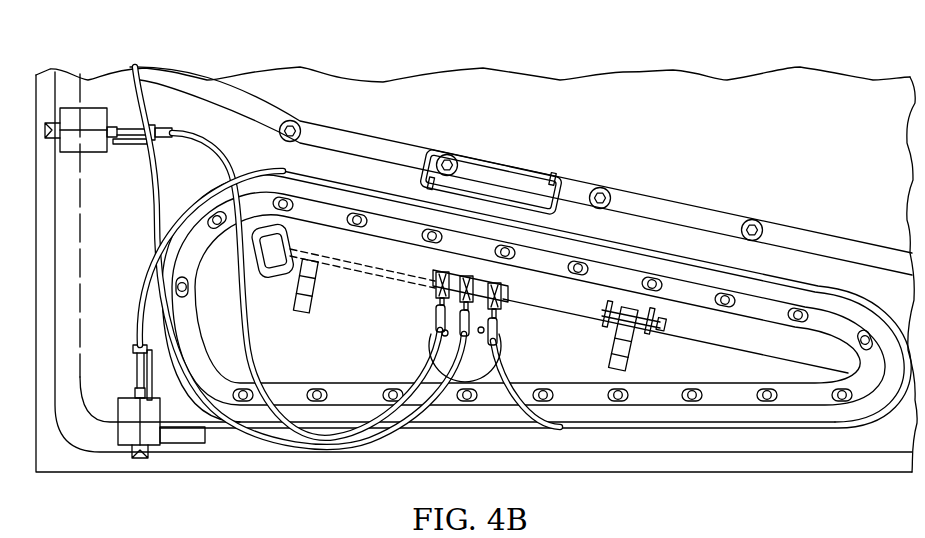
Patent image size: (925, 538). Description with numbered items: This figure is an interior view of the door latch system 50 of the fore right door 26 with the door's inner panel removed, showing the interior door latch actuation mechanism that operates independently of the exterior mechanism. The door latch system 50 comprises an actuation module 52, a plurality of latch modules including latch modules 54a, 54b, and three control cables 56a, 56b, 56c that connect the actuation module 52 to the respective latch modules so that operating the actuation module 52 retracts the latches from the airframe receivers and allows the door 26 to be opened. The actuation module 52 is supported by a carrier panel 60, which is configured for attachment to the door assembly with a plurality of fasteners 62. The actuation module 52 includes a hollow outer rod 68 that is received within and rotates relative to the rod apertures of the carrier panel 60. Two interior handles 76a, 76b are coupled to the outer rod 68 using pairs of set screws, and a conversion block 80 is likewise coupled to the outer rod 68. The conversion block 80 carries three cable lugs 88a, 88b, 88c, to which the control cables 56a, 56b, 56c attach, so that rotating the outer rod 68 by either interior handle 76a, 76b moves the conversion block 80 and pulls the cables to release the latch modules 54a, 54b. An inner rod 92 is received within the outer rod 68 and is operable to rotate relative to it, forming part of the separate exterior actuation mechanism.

The fore right door 26 is at (105, 88).
The door latch system 50 is at (616, 168).
The actuation module 52 is at (588, 323).
The latch module 54a is at (118, 415).
The latch module 54b is at (100, 152).
The control cable 56a is at (140, 300).
The control cable 56b is at (228, 142).
The control cable 56c is at (153, 221).
The carrier panel 60 is at (738, 368).
The fasteners 62 is at (843, 400).
The outer rod 68 is at (398, 258).
The interior handle 76a is at (637, 340).
The interior handle 76b is at (298, 312).
The conversion block 80 is at (466, 275).
The cable lug 88a is at (438, 287).
The cable lug 88b is at (500, 310).
The cable lug 88c is at (495, 282).
The inner rod 92 is at (355, 268).